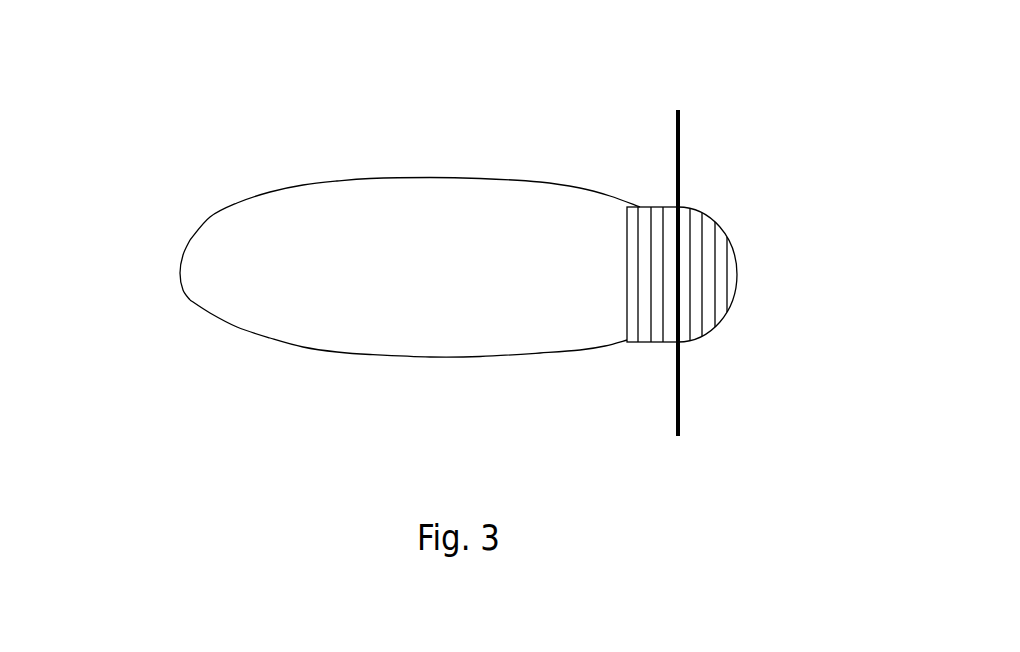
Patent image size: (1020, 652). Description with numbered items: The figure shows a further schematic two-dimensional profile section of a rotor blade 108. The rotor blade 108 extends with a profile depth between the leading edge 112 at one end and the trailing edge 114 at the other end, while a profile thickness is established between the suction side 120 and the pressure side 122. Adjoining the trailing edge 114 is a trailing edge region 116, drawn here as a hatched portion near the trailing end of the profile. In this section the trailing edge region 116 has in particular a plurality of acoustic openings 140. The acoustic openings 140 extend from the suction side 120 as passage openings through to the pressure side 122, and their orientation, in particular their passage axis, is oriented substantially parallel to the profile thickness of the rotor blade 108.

The rotor blade 108 is at (263, 107).
The leading edge 112 is at (175, 273).
The trailing edge 114 is at (741, 284).
The trailing edge region 116 is at (727, 226).
The suction side 120 is at (468, 167).
The pressure side 122 is at (438, 368).
The acoustic openings 140 is at (700, 305).